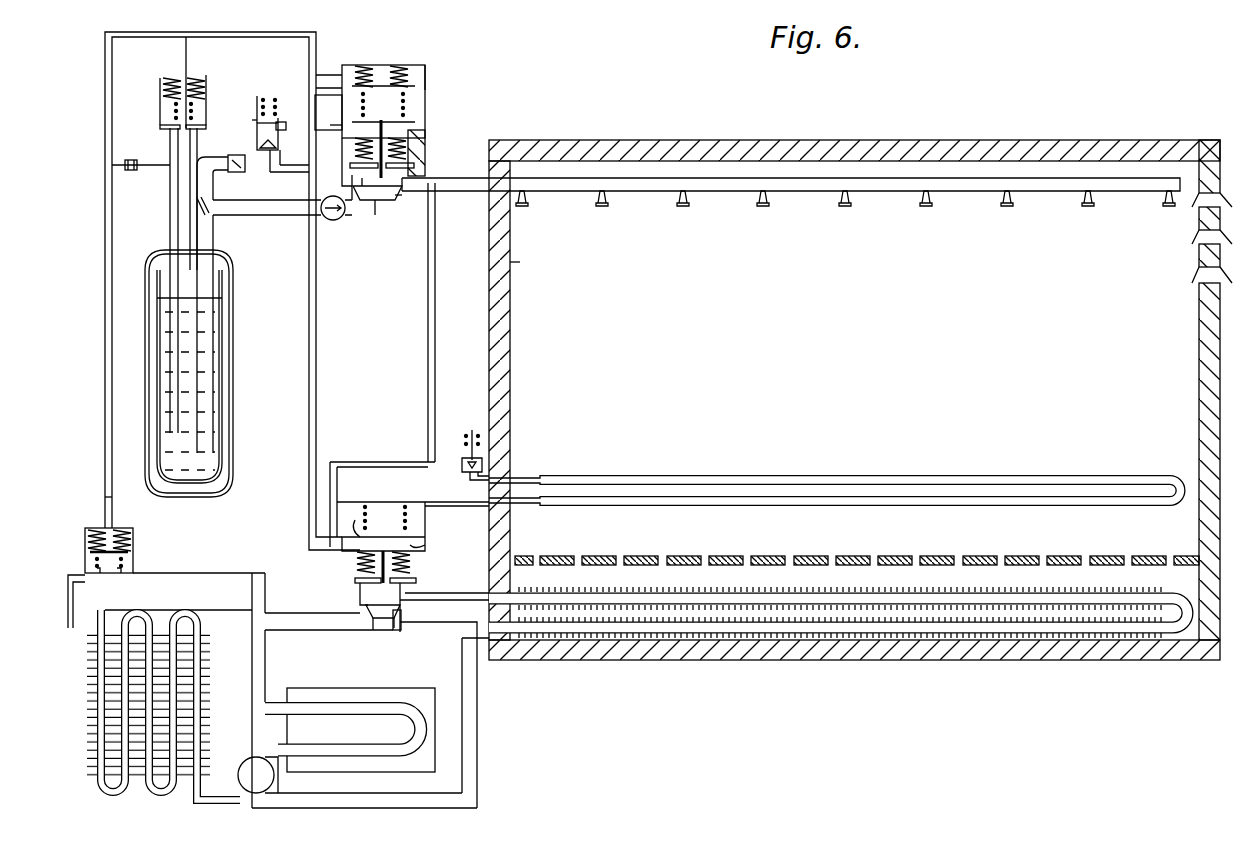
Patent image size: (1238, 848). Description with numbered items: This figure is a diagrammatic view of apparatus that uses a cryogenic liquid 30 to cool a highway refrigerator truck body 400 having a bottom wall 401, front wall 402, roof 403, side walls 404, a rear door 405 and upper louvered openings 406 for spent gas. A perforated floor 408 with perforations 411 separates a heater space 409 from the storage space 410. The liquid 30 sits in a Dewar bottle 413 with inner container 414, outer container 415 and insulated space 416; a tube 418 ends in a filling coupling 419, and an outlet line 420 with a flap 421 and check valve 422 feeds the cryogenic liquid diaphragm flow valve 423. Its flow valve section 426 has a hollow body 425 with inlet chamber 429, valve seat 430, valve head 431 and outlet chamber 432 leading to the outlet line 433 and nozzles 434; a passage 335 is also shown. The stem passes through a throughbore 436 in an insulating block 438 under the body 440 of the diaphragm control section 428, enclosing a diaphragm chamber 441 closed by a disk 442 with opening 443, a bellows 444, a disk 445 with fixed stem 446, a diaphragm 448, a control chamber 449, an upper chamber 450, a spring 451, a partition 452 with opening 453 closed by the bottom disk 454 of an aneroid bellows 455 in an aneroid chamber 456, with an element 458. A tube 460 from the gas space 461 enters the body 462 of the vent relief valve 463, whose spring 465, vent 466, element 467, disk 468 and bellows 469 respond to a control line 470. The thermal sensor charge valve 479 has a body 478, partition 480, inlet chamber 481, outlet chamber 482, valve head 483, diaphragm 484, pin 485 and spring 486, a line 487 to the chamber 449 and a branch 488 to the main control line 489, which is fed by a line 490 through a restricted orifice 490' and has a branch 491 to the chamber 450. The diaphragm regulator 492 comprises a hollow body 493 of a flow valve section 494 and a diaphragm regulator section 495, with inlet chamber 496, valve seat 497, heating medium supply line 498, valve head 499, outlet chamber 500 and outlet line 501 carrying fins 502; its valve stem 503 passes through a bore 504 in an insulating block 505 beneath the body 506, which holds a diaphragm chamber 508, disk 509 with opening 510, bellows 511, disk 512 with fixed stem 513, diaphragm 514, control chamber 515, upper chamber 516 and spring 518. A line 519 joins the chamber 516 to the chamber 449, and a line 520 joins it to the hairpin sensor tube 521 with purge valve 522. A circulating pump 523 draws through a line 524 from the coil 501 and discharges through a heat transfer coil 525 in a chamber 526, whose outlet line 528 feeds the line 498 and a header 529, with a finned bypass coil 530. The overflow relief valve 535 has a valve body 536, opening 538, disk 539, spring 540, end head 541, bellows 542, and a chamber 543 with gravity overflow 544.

The body of highway refrigerator truck 400 is at (845, 394).
The bottom wall 401 is at (752, 650).
The front wall 402 is at (505, 309).
The roof 403 is at (735, 140).
The side walls 404 is at (510, 262).
The door 405 is at (1200, 372).
The louvered openings 406 is at (1196, 270).
The perforated floor 408 is at (900, 556).
The heater space 409 is at (881, 569).
The storage space 410 is at (834, 285).
The perforations 411 is at (1050, 552).
The Dewar bottle 413 is at (211, 373).
The inner container 414 is at (222, 333).
The outer container 415 is at (232, 360).
The insulation space 416 is at (225, 388).
The tube 418 is at (213, 418).
The filling coupling 419 is at (212, 158).
The outlet line 420 is at (290, 218).
The flap 421 is at (210, 214).
The check valve 422 is at (334, 220).
The cryogenic liquid diaphragm flow valve 423 is at (432, 62).
The hollow body of flow valve section 425 is at (355, 192).
The flow valve section 426 is at (430, 171).
The diaphragm control section 428 is at (430, 93).
The inlet chamber 429 is at (390, 200).
The valve seat 430 is at (400, 198).
The valve head 431 is at (375, 214).
The outlet chamber 432 is at (352, 180).
The outlet line 433 is at (475, 192).
The nozzles 434 is at (760, 198).
The passage 335 is at (380, 200).
The oversize throughbore 436 is at (426, 148).
The block of heat insulating material 438 is at (415, 164).
The body of diaphragm control section 440 is at (425, 133).
The diaphragm chamber 441 is at (467, 122).
The disk 442 is at (330, 123).
The opening 443 is at (403, 138).
The metal bellows 444 is at (356, 150).
The disk 445 is at (352, 166).
The fixed stem 446 is at (382, 136).
The diaphragm 448 is at (412, 112).
The control chamber 449 is at (348, 112).
The chamber above diaphragm 450 is at (426, 85).
The helical compression spring 451 is at (383, 99).
The horizontal partition 452 is at (440, 55).
The central opening 453 is at (355, 77).
The bottom disk 454 is at (392, 66).
The aneroid bellows 455 is at (365, 66).
The aneroid chamber 456 is at (410, 66).
The plate 458 is at (350, 68).
The tube 460 is at (170, 151).
The gas space 461 is at (189, 288).
The vent relief valve body 462 is at (205, 94).
The vent relief valve 463 is at (206, 78).
The helical compression spring 465 is at (165, 128).
The vent 466 is at (165, 112).
The plate 467 is at (206, 126).
The disk 468 is at (163, 97).
The bellows 469 is at (160, 83).
The control line 470 is at (186, 50).
The body of thermal sensor charge valve 478 is at (257, 128).
The thermal sensor charge valve 479 is at (280, 120).
The central partition 480 is at (276, 146).
The inlet chamber 481 is at (250, 158).
The outlet chamber 482 is at (254, 118).
The valve head 483 is at (280, 158).
The diaphragm 484 is at (286, 128).
The pin 485 is at (263, 104).
The helical compression spring 486 is at (277, 105).
The line 487 is at (334, 157).
The branch 488 is at (290, 172).
The main control line 489 is at (105, 350).
The line 490 is at (154, 199).
The restricted orifice 490' is at (132, 179).
The branch 491 is at (329, 80).
The diaphragm regulator 492 is at (430, 530).
The hollow body of flow valve section 493 is at (366, 606).
The flow valve section 494 is at (422, 580).
The diaphragm regulator section 495 is at (432, 511).
The inlet chamber 496 is at (401, 622).
The valve seat 497 is at (370, 620).
The heating medium supply line 498 is at (310, 630).
The valve head 499 is at (396, 628).
The outlet chamber 500 is at (360, 594).
The outlet line 501 is at (458, 622).
The fins 502 is at (1030, 640).
The valve stem 503 is at (425, 598).
The oversize bore 504 is at (412, 580).
The block of heat insulating material 505 is at (355, 580).
The body of diaphragm control section 506 is at (330, 530).
The diaphragm chamber 508 is at (412, 562).
The disk 509 is at (330, 542).
The opening 510 is at (391, 518).
The metal bellows 511 is at (357, 560).
The disk 512 is at (357, 572).
The fixed stem 513 is at (383, 514).
The diaphragm 514 is at (355, 518).
The control chamber 515 is at (426, 548).
The chamber above diaphragm 516 is at (330, 510).
The helical compression spring 518 is at (370, 510).
The line 519 is at (428, 352).
The line 520 is at (448, 502).
The sensor tube 521 is at (775, 474).
The manually operable valve 522 is at (456, 432).
The circulating pump 523 is at (248, 755).
The line 524 is at (477, 742).
The heat transfer coil 525 is at (345, 757).
The chamber 526 is at (345, 690).
The outlet line 528 is at (252, 667).
The header 529 is at (210, 573).
The high resistance finned bypass coil 530 is at (124, 797).
The overflow relief valve 535 is at (150, 497).
The valve body 536 is at (88, 540).
The opening 538 is at (99, 573).
The disk 539 is at (119, 573).
The helical compression spring 540 is at (95, 559).
The end head 541 is at (128, 552).
The metal bellows 542 is at (130, 540).
The chamber 543 is at (124, 566).
The gravity overflow 544 is at (72, 630).
The cryogenic liquid 30 is at (190, 391).